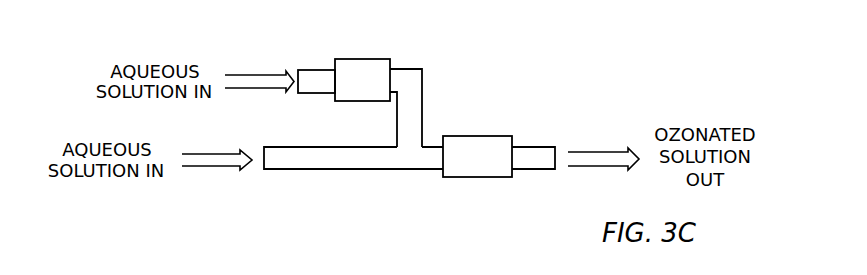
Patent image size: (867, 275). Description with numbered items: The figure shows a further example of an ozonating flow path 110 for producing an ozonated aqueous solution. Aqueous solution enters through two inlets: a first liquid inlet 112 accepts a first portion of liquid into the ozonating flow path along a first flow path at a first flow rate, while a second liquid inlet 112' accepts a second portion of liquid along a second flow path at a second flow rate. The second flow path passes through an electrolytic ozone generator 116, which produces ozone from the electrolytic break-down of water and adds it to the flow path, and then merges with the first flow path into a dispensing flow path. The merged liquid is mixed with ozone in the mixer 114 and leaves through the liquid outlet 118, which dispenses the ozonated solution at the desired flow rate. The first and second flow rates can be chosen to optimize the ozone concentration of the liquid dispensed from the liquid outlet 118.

The ozonating flow path 110 is at (359, 198).
The first liquid inlet 112 is at (315, 189).
The second liquid inlet 112' is at (293, 102).
The mixer 114 is at (481, 178).
The electrolytic ozone generator 116 is at (358, 59).
The liquid outlet 118 is at (547, 170).